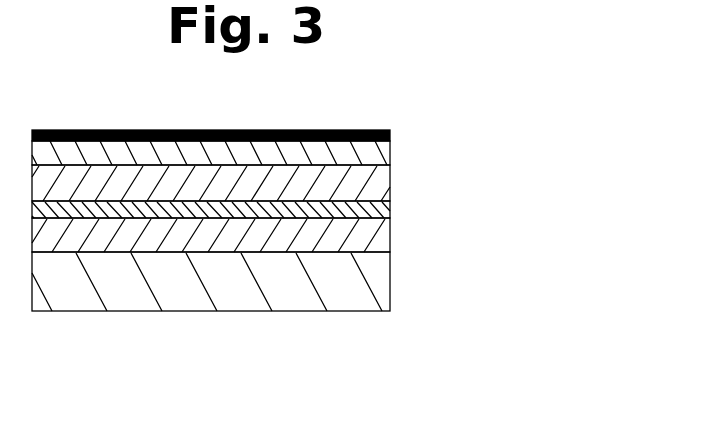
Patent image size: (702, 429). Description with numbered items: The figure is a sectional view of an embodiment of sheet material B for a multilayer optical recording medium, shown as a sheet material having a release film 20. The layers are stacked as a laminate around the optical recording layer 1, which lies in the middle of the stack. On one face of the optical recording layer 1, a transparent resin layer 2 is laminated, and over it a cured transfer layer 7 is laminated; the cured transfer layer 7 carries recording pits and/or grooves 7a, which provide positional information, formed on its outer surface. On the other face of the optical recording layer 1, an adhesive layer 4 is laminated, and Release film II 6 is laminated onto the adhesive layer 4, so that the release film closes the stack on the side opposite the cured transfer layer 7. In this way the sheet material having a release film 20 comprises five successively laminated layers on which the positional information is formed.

The sheet material having a release film 20 is at (287, 160).
The recording pits and/or grooves 7a is at (367, 128).
The cured transfer layer 7 is at (397, 131).
The transparent resin layer 2 is at (373, 182).
The optical recording layer 1 is at (378, 210).
The adhesive layer 4 is at (375, 233).
The Release film II 6 is at (368, 279).